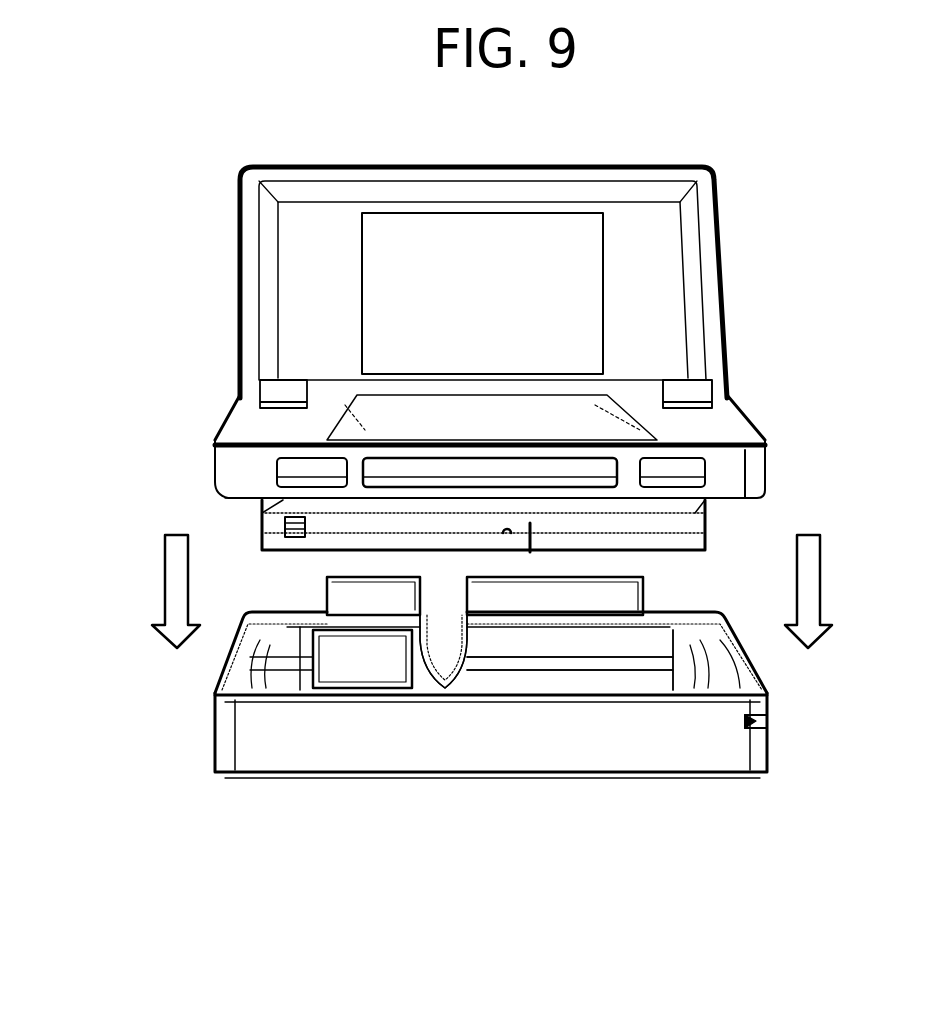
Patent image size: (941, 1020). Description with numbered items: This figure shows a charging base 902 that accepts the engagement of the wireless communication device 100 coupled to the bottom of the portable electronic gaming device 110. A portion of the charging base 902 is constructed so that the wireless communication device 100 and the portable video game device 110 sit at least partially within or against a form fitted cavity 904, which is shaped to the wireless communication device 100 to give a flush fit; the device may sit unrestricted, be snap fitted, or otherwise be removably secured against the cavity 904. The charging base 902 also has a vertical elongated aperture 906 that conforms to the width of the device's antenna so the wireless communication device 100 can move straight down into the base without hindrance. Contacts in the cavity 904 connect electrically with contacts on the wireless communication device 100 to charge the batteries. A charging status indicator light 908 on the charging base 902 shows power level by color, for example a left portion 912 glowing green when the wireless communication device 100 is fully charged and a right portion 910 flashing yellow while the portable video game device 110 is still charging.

The wireless communication device 100 is at (210, 467).
The portable electronic gaming device 110 is at (681, 426).
The charging base 902 is at (505, 783).
The form fitted cavity 904 is at (668, 677).
The vertical elongated aperture 906 is at (430, 668).
The charging status indicator light 908 is at (763, 722).
The right portion 910 is at (768, 718).
The left portion 912 is at (752, 725).